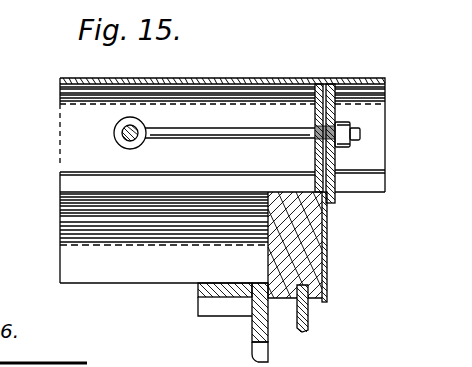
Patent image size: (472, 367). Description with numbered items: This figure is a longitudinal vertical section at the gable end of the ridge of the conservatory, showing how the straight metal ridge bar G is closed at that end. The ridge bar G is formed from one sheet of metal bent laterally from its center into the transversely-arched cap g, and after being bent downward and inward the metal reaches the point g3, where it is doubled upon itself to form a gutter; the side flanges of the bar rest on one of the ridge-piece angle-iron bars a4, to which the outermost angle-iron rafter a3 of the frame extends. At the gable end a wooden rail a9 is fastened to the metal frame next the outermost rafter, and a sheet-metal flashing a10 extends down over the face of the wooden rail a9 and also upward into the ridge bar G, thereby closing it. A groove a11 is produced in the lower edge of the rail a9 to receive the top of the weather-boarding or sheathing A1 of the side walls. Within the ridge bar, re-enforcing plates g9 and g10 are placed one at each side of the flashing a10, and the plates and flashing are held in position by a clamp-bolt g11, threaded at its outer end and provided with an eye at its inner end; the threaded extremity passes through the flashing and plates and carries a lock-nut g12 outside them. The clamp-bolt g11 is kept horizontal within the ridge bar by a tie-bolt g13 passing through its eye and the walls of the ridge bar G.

The ridge bar G is at (68, 127).
The transversely-arched cap g is at (290, 68).
The point g3 is at (386, 172).
The re-enforcing plate g9 is at (314, 152).
The re-enforcing plate g10 is at (337, 165).
The clamp-bolt g11 is at (230, 128).
The lock-nut g12 is at (352, 111).
The tie-bolt g13 is at (123, 134).
The angle-iron bar a4 is at (67, 246).
The wooden rail a9 is at (273, 253).
The sheet-metal flashing a10 is at (328, 250).
The groove a11 is at (297, 303).
The angle-iron rafter a3 is at (252, 342).
The weather-boarding or sheathing A1 is at (309, 323).